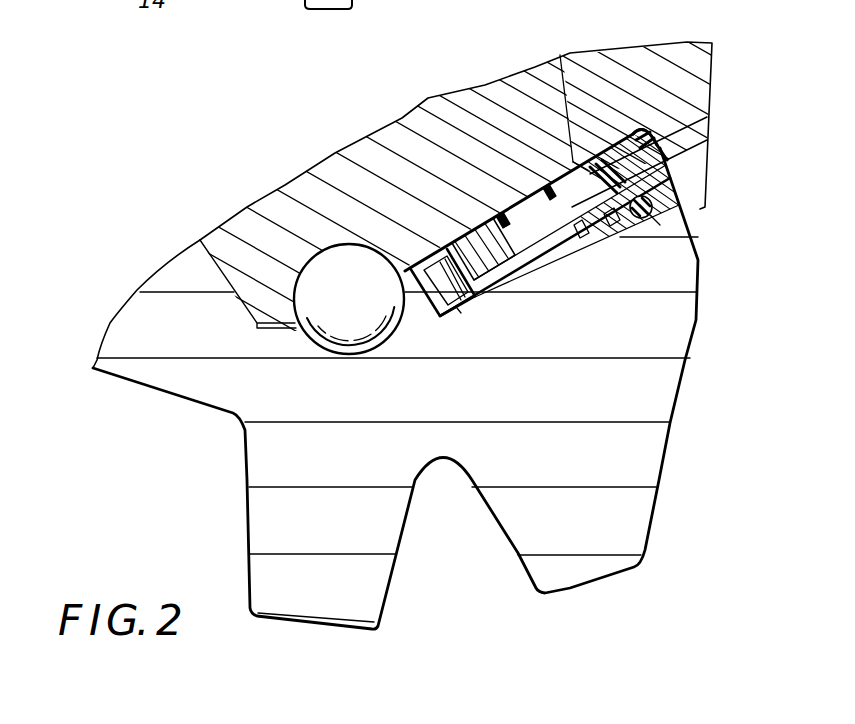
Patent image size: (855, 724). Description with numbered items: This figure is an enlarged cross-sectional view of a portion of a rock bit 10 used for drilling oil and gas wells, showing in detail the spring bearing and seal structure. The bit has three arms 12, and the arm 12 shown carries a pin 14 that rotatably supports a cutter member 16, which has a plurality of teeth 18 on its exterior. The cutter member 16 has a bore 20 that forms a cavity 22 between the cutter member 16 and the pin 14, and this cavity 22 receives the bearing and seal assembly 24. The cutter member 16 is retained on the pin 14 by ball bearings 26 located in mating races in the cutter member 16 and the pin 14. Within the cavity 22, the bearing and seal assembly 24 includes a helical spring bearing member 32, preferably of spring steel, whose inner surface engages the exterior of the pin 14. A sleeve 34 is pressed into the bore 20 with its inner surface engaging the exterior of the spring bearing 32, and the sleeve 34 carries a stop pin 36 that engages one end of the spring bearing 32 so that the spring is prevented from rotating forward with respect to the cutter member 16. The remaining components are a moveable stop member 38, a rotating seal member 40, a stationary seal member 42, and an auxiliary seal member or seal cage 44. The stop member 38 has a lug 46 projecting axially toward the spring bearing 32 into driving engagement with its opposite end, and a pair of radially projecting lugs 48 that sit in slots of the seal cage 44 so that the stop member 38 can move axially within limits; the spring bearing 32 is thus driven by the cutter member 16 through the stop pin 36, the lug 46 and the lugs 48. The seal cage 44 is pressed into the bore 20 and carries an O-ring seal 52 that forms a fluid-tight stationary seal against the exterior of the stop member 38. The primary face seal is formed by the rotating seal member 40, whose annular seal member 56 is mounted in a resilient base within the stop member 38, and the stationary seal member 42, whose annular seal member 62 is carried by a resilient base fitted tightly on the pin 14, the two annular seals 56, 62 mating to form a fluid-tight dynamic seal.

The rock bit 10 is at (285, 130).
The arm 12 is at (690, 172).
The pin 14 is at (237, 225).
The cutter member 16 is at (163, 323).
The teeth 18 is at (267, 572).
The bore 20 is at (532, 265).
The cavity 22 is at (498, 220).
The bearing and seal assembly 24 is at (450, 232).
The ball bearings 26 is at (355, 306).
The helical spring bearing member 32 is at (525, 207).
The sleeve 34 is at (498, 280).
The stop pin 36 is at (455, 310).
The moveable stop member 38 is at (573, 162).
The rotating seal member 40 is at (593, 162).
The stationary seal member 42 is at (707, 117).
The auxiliary seal member or seal cage 44 is at (633, 220).
The lug 46 is at (577, 236).
The radially projecting lugs 48 is at (607, 224).
The O-ring seal 52 is at (660, 225).
The annular seal member 56 is at (590, 162).
The annular seal member 62 is at (707, 140).